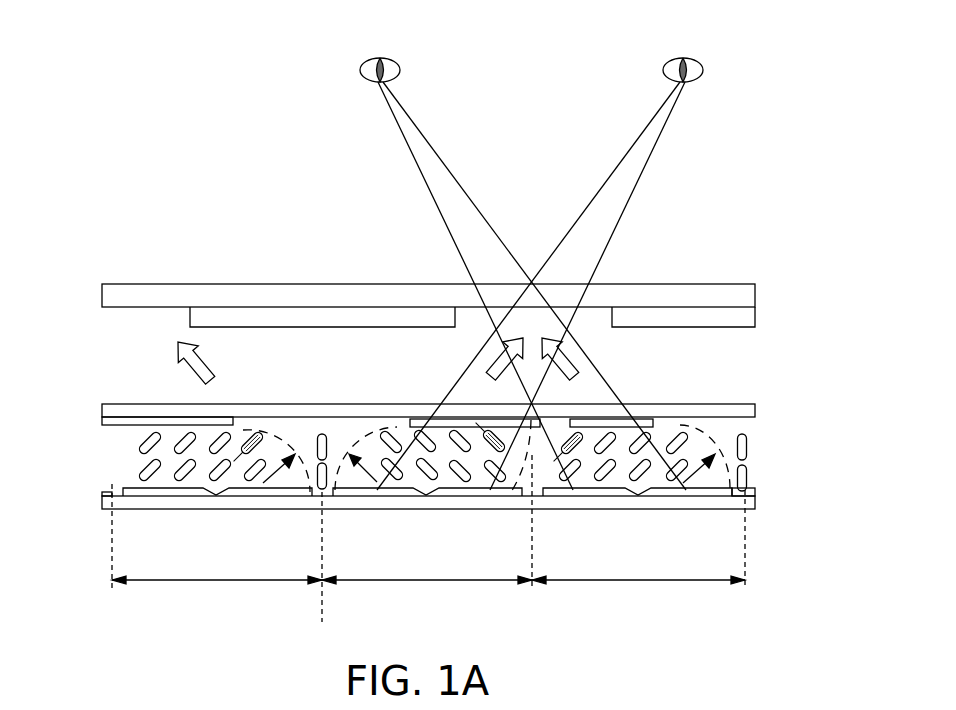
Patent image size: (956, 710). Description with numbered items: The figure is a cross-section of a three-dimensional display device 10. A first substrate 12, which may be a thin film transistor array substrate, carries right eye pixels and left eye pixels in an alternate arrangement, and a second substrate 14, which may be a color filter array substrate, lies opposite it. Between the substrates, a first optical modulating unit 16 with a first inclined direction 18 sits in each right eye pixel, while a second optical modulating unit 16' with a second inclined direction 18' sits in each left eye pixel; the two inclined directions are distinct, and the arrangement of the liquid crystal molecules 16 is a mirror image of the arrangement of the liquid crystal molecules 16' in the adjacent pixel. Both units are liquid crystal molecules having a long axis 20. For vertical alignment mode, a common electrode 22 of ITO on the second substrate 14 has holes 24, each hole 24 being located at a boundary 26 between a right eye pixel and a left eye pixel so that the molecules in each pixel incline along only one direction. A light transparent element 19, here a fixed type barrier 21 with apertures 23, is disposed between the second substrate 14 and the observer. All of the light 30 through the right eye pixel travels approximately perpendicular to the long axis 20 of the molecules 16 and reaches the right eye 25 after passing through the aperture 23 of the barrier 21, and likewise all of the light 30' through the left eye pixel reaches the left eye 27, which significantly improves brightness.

The 3D display device 10 is at (822, 561).
The first substrate 12 is at (100, 502).
The second substrate 14 is at (100, 410).
The first optical modulating unit 16 is at (443, 425).
The second optical modulating unit 16' is at (437, 428).
The first inclined direction 18 is at (367, 508).
The second inclined direction 18' is at (488, 508).
The light transparent element 19 is at (460, 332).
The long axis 20 is at (258, 436).
The barrier 21 is at (745, 320).
The common electrode 22 is at (102, 426).
The aperture 23 is at (532, 314).
The hole 24 is at (306, 414).
The right eye 25 is at (704, 70).
The boundary 26 is at (324, 604).
The left eye 27 is at (360, 70).
The light through the right eye pixel 30 is at (485, 357).
The light through the left eye pixel 30' is at (402, 359).